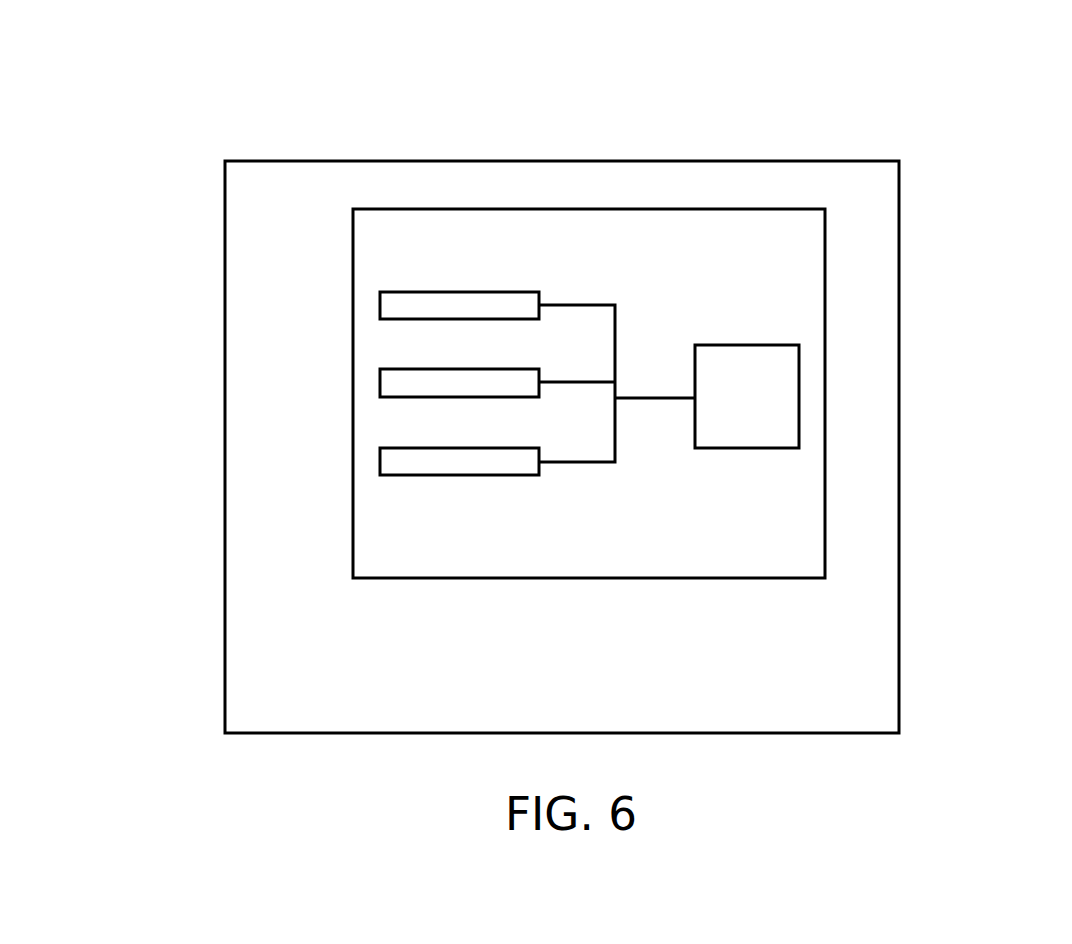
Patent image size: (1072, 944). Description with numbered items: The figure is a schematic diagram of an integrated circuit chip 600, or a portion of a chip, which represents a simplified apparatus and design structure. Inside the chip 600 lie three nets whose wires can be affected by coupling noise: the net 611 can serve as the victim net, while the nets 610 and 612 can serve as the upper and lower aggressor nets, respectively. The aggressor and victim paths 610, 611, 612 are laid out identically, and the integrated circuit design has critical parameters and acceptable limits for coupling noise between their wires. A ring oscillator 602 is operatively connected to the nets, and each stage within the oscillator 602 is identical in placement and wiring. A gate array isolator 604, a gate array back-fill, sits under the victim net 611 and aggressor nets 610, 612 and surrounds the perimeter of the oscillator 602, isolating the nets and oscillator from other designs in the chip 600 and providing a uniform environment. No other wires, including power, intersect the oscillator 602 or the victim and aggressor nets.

The integrated circuit chip 600 is at (899, 657).
The ring oscillator 602 is at (799, 396).
The gate array isolator 604 is at (590, 209).
The upper aggressor net 610 is at (380, 306).
The victim net 611 is at (380, 381).
The lower aggressor net 612 is at (380, 462).